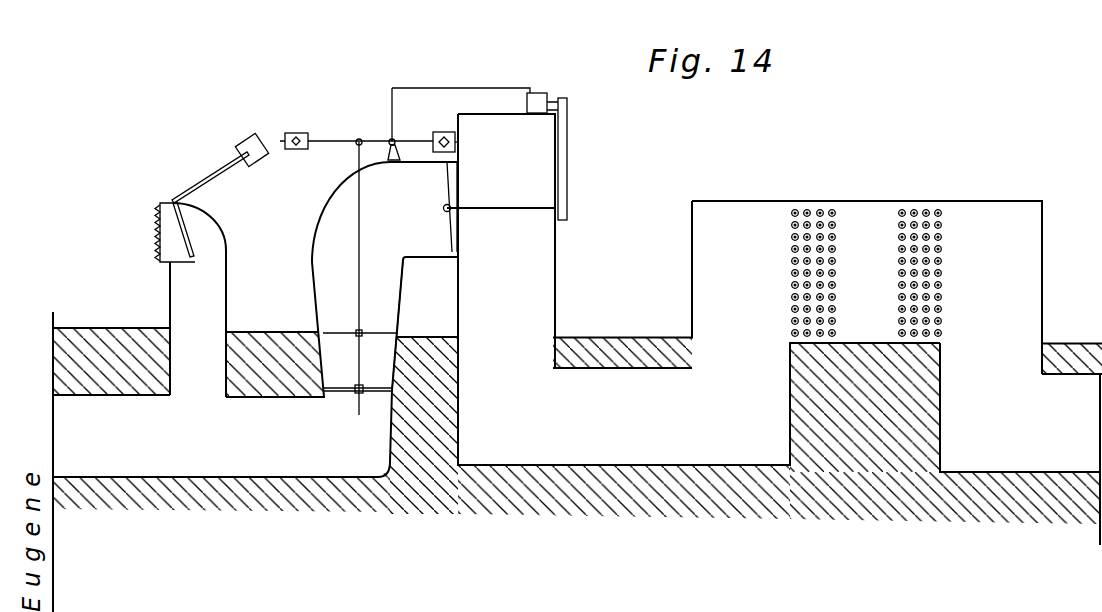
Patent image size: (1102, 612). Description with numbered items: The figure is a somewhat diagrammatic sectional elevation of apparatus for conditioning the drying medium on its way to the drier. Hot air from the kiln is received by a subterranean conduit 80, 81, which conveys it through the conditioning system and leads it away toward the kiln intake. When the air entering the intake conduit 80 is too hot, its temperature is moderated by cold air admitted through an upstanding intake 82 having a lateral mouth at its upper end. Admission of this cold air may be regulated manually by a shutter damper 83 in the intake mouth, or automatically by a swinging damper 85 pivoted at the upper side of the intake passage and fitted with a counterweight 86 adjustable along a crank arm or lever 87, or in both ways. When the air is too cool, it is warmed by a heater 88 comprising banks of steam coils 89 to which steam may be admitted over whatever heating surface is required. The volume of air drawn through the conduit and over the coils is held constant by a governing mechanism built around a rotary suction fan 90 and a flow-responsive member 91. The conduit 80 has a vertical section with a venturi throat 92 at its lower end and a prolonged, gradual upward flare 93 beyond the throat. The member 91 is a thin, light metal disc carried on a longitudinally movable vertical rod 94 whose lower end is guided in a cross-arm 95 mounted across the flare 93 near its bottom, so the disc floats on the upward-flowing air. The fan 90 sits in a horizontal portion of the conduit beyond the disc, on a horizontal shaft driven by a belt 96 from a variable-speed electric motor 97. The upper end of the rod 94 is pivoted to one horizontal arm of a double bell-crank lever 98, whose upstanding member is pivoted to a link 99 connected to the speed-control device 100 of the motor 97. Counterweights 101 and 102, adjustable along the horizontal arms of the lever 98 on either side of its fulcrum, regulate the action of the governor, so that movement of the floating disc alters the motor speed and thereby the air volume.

The intake conduit 80 is at (221, 462).
The conduit 81 is at (1021, 444).
The upstanding intake 82 is at (190, 302).
The shutter damper 83 is at (155, 228).
The swinging damper 85 is at (180, 220).
The counterweight 86 is at (253, 148).
The crank arm or lever 87 is at (217, 172).
The heater 88 is at (867, 200).
The steam coils 89 is at (900, 272).
The rotary suction fan 90 is at (453, 240).
The member responsive to the flow of air 91 is at (380, 332).
The venturi throat 92 is at (333, 397).
The upward flare 93 is at (402, 310).
The vertical rod 94 is at (362, 227).
The cross-arm 95 is at (377, 397).
The belt 96 is at (565, 148).
The variable-speed electric motor 97 is at (550, 97).
The double bell-crank lever 98 is at (392, 103).
The link 99 is at (460, 88).
The speed-control device 100 is at (535, 92).
The counterweight 101 is at (305, 125).
The counterweight 102 is at (443, 135).